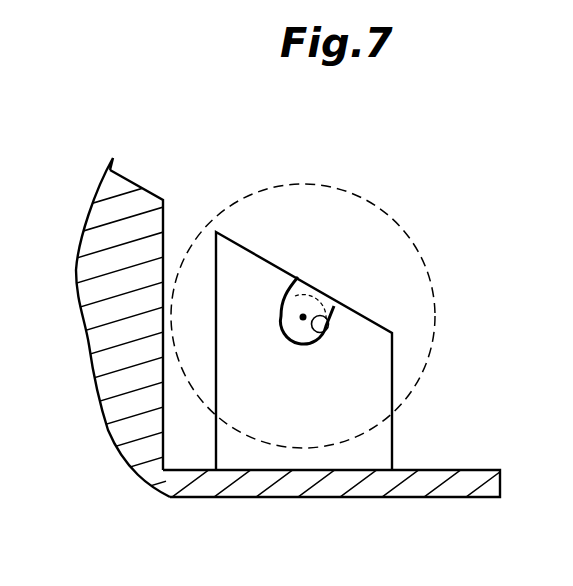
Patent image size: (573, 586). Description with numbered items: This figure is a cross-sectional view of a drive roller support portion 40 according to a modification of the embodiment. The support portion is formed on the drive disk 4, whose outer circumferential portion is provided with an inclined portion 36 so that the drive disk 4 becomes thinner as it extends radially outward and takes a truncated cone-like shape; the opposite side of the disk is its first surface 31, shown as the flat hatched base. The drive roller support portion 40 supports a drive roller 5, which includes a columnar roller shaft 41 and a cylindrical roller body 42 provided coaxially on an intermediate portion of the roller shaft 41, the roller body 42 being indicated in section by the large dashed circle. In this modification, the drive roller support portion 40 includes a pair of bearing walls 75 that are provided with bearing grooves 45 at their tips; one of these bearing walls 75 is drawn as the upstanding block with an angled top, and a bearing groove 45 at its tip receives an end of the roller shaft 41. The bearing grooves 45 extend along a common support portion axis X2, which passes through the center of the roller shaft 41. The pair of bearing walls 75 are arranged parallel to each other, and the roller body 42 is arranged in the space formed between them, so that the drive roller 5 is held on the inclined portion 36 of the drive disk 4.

The drive disk 4 is at (267, 347).
The inclined portion 36 is at (161, 198).
The first surface 31 is at (310, 498).
The roller body 42 is at (412, 237).
The drive roller 5 is at (363, 290).
The drive roller support portion 40 is at (363, 351).
The bearing wall 75 is at (377, 358).
The roller shaft 41 is at (303, 316).
The support portion axis X2 is at (314, 292).
The bearing groove 45 is at (329, 320).